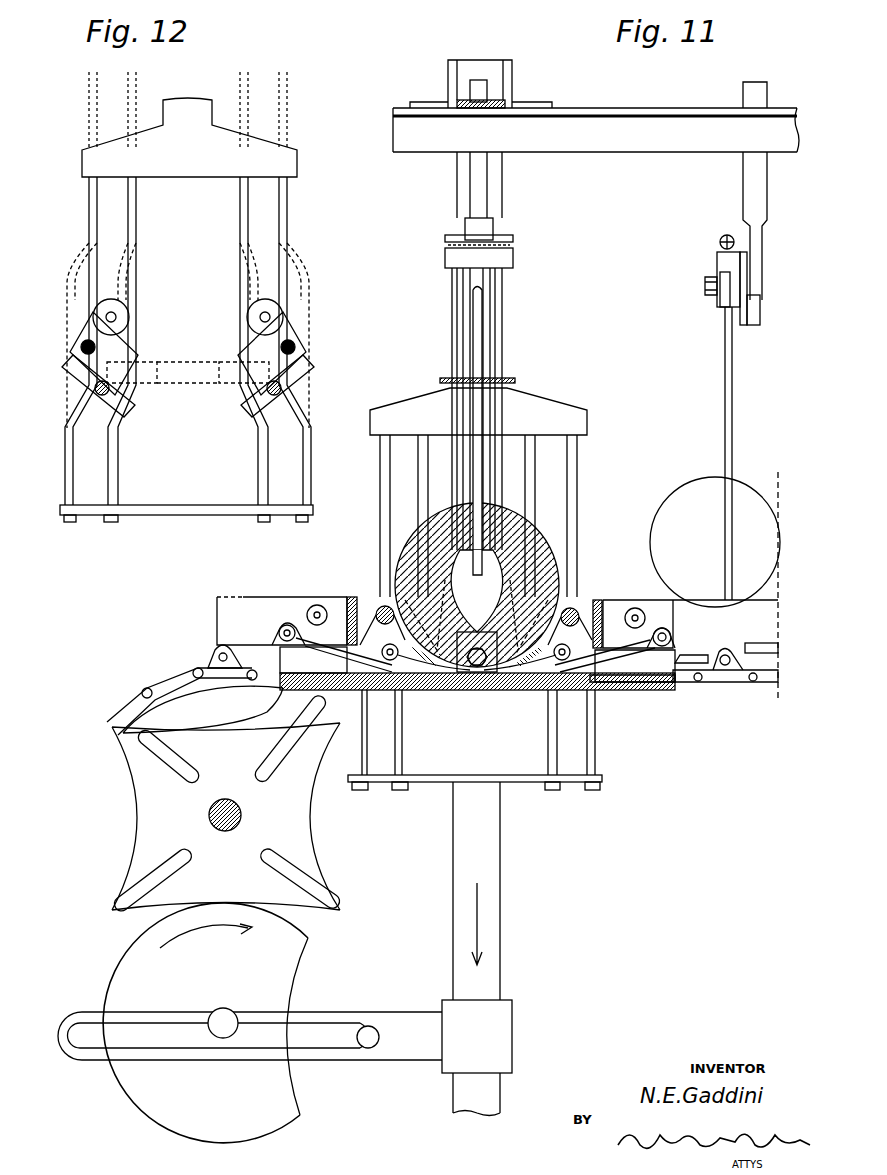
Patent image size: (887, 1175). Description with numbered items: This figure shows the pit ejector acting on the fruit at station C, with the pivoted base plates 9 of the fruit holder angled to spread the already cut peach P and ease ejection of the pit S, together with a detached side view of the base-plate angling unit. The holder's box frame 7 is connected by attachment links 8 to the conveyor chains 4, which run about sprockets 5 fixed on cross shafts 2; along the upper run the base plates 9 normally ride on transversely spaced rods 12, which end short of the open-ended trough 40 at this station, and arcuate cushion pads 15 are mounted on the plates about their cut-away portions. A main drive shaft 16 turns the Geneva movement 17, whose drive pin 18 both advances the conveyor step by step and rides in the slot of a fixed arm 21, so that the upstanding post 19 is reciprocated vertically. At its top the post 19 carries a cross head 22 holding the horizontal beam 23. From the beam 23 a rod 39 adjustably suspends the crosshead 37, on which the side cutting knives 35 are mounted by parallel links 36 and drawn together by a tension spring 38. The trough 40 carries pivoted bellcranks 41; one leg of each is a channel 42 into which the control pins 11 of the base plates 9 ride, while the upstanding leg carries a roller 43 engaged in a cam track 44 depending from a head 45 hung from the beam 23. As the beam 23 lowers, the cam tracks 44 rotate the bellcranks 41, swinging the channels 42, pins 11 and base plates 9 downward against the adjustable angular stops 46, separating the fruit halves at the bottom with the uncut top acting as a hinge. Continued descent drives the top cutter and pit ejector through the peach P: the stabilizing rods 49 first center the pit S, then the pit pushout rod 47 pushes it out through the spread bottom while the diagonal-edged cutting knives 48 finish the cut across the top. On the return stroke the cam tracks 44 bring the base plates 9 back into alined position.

In FIG. 11, the cross shaft 2 is at (228, 799).
In FIG. 11, the chain 4 is at (160, 690).
In FIG. 11, the sprocket 5 is at (221, 684).
In FIG. 11, the box frame 7 is at (683, 615).
In FIG. 11, the attachment link 8 is at (468, 668).
In FIG. 11, the base plate 9 is at (388, 662).
In FIG. 12, the control pin 11 is at (105, 405).
In FIG. 11, the control pin 11 is at (590, 600).
In FIG. 11, the rod 12 is at (690, 665).
In FIG. 11, the cushion pad 15 is at (385, 605).
In FIG. 11, the main drive shaft 16 is at (225, 1008).
In FIG. 11, the Geneva movement 17 is at (133, 948).
In FIG. 11, the drive pin 18 is at (370, 1027).
In FIG. 11, the post 19 is at (490, 855).
In FIG. 11, the arm 21 is at (248, 1052).
In FIG. 11, the cross head 22 is at (512, 82).
In FIG. 11, the beam 23 is at (623, 130).
In FIG. 11, the knife 35 is at (733, 390).
In FIG. 11, the parallel link 36 is at (745, 278).
In FIG. 11, the crosshead 37 is at (757, 308).
In FIG. 11, the tension spring 38 is at (720, 243).
In FIG. 11, the rod 39 is at (747, 180).
In FIG. 11, the trough 40 is at (540, 688).
In FIG. 12, the bellcrank 41 is at (88, 340).
In FIG. 11, the bellcrank 41 is at (570, 592).
In FIG. 12, the channel 42 is at (68, 372).
In FIG. 12, the roller 43 is at (118, 302).
In FIG. 11, the roller 43 is at (575, 585).
In FIG. 12, the cam track 44 is at (93, 240).
In FIG. 11, the cam track 44 is at (530, 495).
In FIG. 12, the head 45 is at (188, 150).
In FIG. 11, the head 45 is at (550, 413).
In FIG. 11, the stop 46 is at (343, 662).
In FIG. 11, the pit pushout rod 47 is at (477, 580).
In FIG. 11, the cutting knife 48 is at (480, 318).
In FIG. 11, the pit stabilizing rod 49 is at (460, 355).
In FIG. 11, the pit S is at (415, 540).
In FIG. 11, the peach P is at (672, 513).